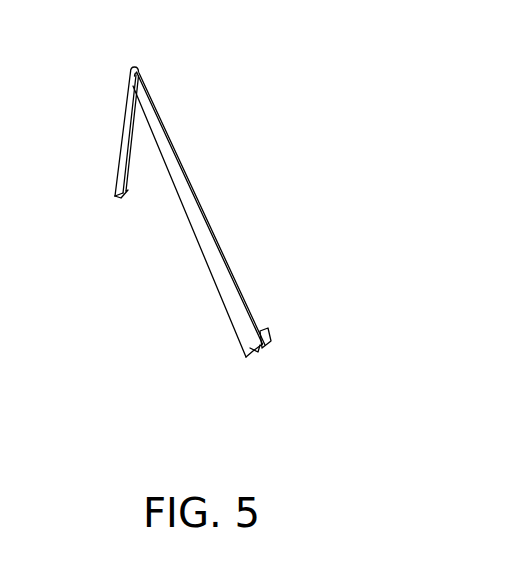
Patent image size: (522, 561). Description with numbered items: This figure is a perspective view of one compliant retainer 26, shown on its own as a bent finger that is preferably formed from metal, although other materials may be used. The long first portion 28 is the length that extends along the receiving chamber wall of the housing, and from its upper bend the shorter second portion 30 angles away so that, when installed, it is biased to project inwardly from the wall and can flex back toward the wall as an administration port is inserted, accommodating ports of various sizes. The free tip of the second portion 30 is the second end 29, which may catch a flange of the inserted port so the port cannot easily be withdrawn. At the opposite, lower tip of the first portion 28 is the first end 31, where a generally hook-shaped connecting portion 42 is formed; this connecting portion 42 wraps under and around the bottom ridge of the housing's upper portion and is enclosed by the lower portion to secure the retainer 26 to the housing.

The compliant retainer 26 is at (215, 206).
The first portion 28 is at (192, 188).
The second end 29 is at (119, 198).
The second portion 30 is at (121, 124).
The first end 31 is at (267, 330).
The connecting portion 42 is at (262, 350).